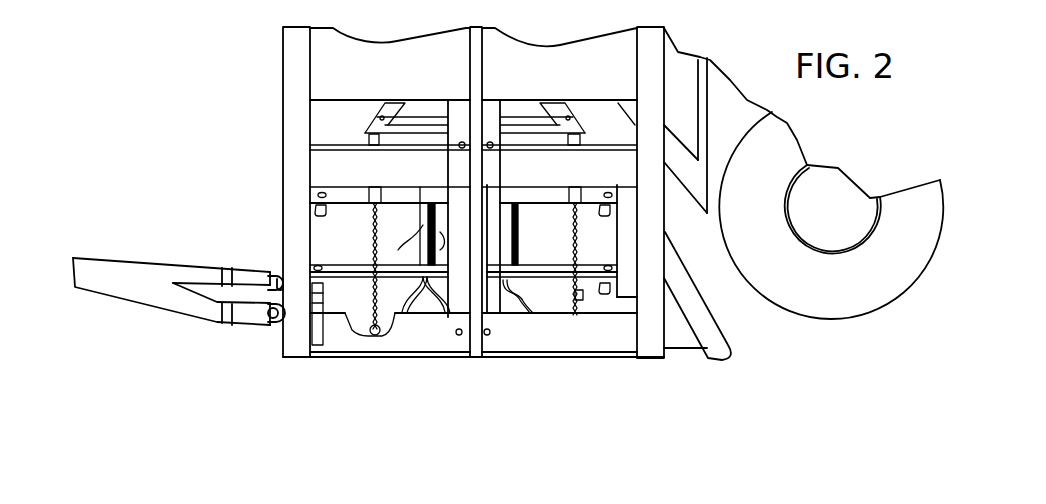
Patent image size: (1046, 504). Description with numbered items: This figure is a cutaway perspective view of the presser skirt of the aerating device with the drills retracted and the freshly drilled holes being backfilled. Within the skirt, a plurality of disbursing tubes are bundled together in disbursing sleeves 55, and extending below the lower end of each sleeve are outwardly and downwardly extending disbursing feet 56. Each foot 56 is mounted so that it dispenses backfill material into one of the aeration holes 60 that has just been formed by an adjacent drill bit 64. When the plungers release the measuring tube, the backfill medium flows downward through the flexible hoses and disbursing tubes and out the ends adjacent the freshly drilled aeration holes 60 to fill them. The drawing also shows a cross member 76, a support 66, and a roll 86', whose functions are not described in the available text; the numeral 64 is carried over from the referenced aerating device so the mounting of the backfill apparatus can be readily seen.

The cross beam 76 is at (378, 166).
The disbursing sleeve 55 is at (423, 223).
The disbursing foot 56 is at (420, 303).
The aeration hole 60 is at (380, 323).
The drill bit 64 is at (583, 288).
The cradle support 66 is at (367, 313).
The roll 86' is at (831, 256).